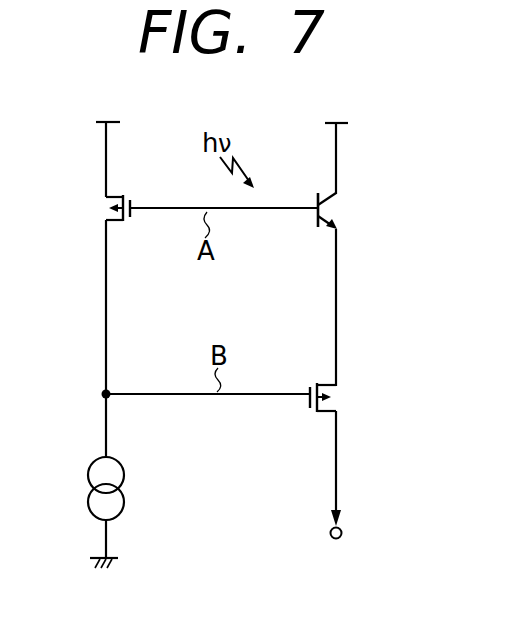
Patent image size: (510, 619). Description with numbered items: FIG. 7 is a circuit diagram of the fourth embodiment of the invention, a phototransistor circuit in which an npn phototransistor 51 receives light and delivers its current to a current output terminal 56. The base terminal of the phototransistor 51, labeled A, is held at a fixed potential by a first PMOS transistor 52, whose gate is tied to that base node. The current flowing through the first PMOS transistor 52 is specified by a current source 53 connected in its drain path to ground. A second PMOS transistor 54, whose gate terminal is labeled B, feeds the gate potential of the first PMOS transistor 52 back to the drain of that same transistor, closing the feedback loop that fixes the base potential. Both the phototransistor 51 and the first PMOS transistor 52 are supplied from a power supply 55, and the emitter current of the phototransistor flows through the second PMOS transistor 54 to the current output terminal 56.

The npn phototransistor Q1 51 is at (343, 199).
The PMOS MP1 52 is at (98, 196).
The current source Io 53 is at (93, 462).
The PMOS MP2 54 is at (344, 388).
The power supply Vcc 55 is at (92, 121).
The current output terminal Iout 56 is at (342, 531).